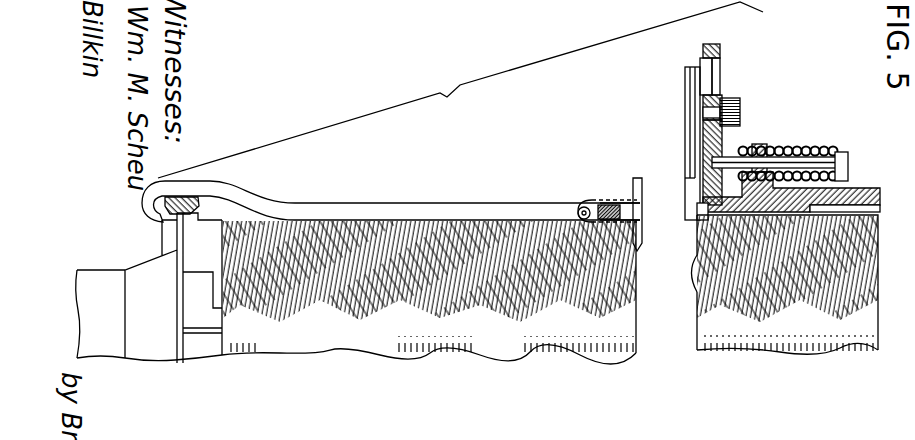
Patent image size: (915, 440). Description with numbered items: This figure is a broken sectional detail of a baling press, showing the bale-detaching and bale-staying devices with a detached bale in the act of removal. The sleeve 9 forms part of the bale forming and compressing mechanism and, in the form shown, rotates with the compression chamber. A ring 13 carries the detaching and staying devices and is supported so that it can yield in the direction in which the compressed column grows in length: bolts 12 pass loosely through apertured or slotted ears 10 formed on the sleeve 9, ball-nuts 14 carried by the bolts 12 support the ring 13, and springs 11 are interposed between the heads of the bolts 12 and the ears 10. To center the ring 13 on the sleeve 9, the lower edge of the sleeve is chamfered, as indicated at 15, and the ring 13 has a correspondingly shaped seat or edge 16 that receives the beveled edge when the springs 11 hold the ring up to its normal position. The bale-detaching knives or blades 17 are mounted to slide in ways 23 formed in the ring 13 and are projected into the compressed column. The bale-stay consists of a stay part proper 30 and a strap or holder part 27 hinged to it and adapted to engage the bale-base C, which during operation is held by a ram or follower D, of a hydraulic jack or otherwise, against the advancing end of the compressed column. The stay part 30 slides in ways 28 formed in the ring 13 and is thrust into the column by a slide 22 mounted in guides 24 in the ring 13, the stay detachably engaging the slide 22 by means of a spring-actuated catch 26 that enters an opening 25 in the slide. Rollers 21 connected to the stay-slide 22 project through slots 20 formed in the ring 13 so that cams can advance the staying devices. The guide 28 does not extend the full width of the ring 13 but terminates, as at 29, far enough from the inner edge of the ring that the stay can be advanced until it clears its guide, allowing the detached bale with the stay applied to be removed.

The sleeve 9 is at (877, 188).
The apertured or slotted ears 10 is at (764, 147).
The springs 11 is at (840, 151).
The bolts 12 is at (813, 155).
The ring 13 is at (721, 53).
The ball-nuts 14 is at (741, 114).
The chamfered or beveled edge 15 is at (734, 158).
The seat or edge 16 is at (862, 196).
The knives or blades 17 is at (692, 266).
The slots 20 is at (724, 86).
The extensions or rollers 21 is at (741, 104).
The slide 22 is at (705, 150).
The ways 23 is at (641, 206).
The guides 24 is at (703, 73).
The opening 25 is at (697, 212).
The spring-actuated catch 26 is at (641, 224).
The strap or holder part 27 is at (577, 211).
The ways 28 is at (690, 117).
The termination of guide 29 is at (685, 175).
The latch 30 is at (626, 200).
The bale-base C is at (206, 349).
The ram or follower D is at (150, 348).